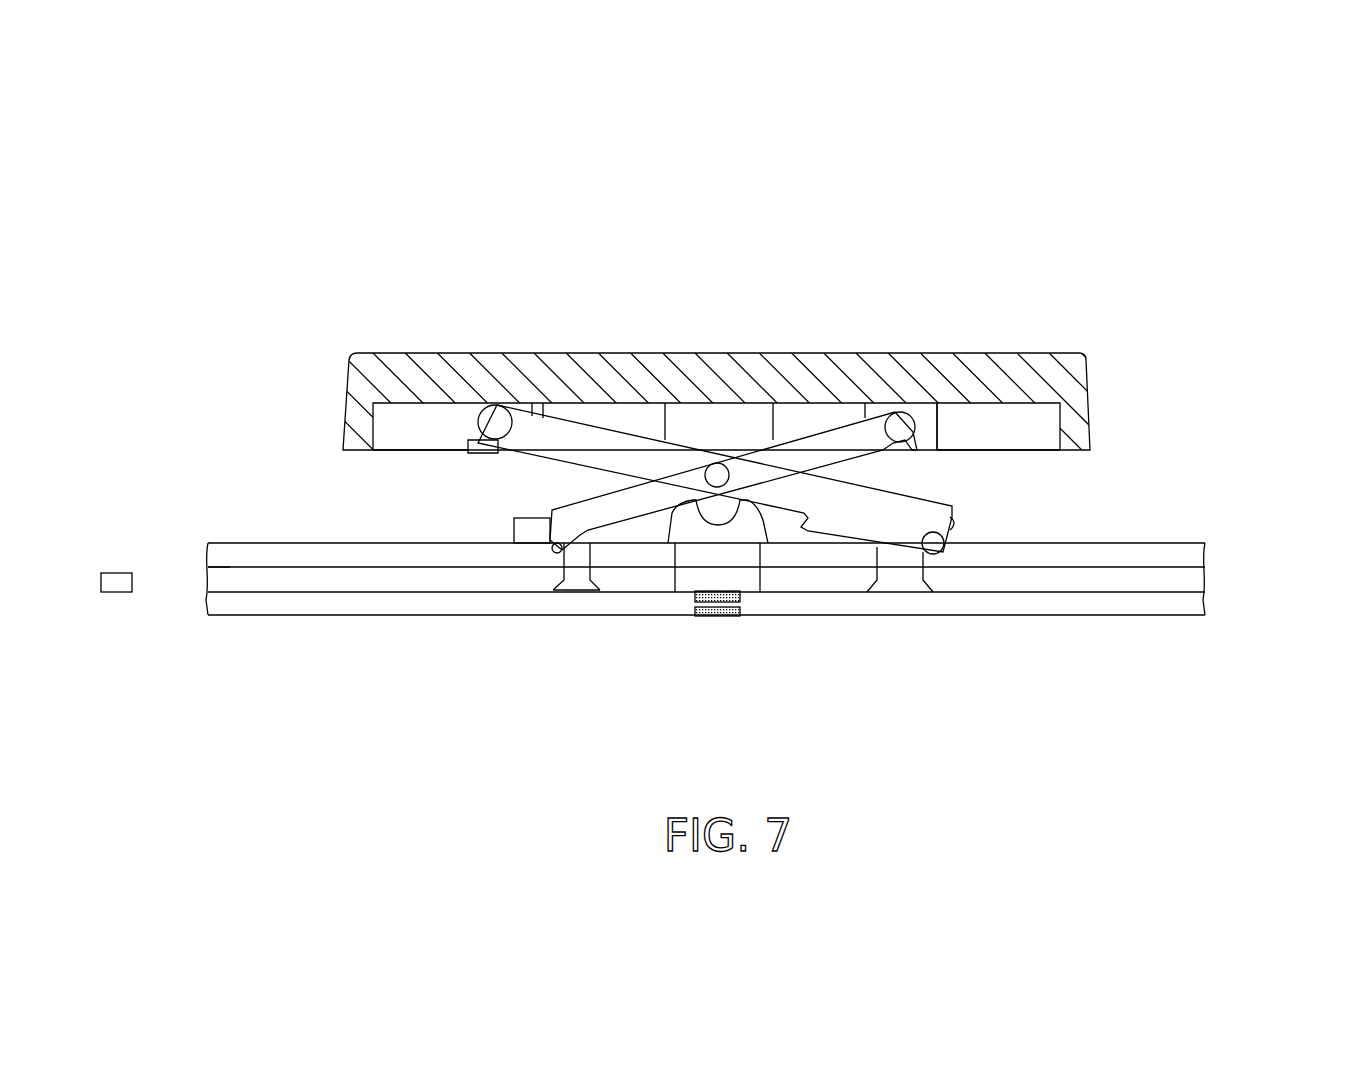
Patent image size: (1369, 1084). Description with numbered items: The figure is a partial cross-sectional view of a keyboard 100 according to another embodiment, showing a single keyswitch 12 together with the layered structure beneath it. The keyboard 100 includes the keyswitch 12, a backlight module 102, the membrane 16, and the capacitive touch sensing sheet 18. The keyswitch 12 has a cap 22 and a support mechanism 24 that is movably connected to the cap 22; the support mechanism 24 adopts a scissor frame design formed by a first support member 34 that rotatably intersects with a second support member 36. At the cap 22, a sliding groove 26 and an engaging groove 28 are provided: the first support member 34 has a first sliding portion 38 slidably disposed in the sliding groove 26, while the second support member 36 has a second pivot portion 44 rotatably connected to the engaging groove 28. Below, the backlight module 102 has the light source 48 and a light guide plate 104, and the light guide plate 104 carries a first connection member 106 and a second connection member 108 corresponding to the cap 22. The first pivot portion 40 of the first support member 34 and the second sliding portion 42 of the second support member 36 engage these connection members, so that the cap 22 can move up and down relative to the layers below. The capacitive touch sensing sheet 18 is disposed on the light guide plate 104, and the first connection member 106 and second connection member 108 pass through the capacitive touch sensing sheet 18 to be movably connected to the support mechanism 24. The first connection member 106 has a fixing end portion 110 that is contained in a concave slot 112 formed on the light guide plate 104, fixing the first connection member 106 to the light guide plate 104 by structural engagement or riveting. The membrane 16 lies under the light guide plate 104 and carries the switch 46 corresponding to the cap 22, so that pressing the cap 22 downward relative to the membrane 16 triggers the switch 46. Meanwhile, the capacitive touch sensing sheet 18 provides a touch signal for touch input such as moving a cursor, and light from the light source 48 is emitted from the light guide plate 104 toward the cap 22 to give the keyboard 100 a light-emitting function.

The keyboard 100 is at (1195, 215).
The keyswitch 12 is at (425, 353).
The cap 22 is at (862, 366).
The support mechanism 24 is at (817, 252).
The first support member 34 is at (600, 440).
The second support member 36 is at (812, 440).
The first sliding portion 38 is at (494, 418).
The second pivot portion 44 is at (900, 425).
The sliding groove 26 is at (480, 450).
The engaging groove 28 is at (928, 427).
The first pivot portion 40 is at (925, 522).
The second sliding portion 42 is at (565, 525).
The switch 46 is at (715, 613).
The capacitive touch sensing sheet 18 is at (1195, 555).
The membrane 16 is at (1195, 605).
The backlight module 102 is at (188, 512).
The light source 48 is at (110, 577).
The light guide plate 104 is at (223, 583).
The first connection member 106 is at (533, 530).
The second connection member 108 is at (952, 525).
The fixing end portion 110 is at (587, 590).
The concave slot 112 is at (597, 590).